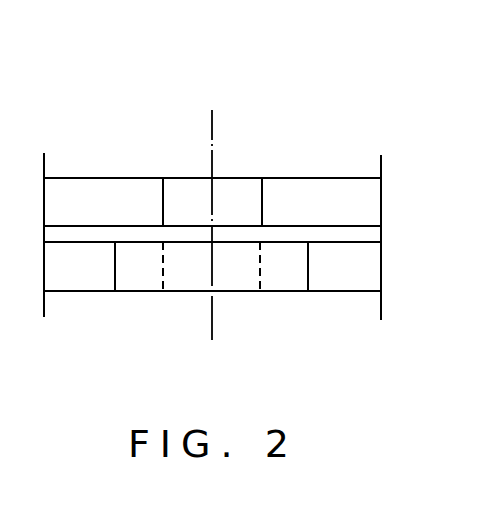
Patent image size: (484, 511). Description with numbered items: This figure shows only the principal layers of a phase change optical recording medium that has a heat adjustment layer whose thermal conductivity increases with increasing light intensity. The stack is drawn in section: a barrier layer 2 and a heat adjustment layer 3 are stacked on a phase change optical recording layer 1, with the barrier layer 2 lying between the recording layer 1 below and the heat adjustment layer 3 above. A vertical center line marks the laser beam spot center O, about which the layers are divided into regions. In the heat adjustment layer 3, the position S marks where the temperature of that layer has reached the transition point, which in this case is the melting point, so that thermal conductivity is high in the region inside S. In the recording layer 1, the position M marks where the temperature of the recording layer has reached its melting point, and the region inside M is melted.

The phase change optical recording layer 1 is at (374, 272).
The barrier layer 2 is at (381, 240).
The heat adjustment layer 3 is at (372, 206).
The transition point position S is at (261, 164).
The melting point position M is at (307, 312).
The laser beam spot center O is at (212, 240).